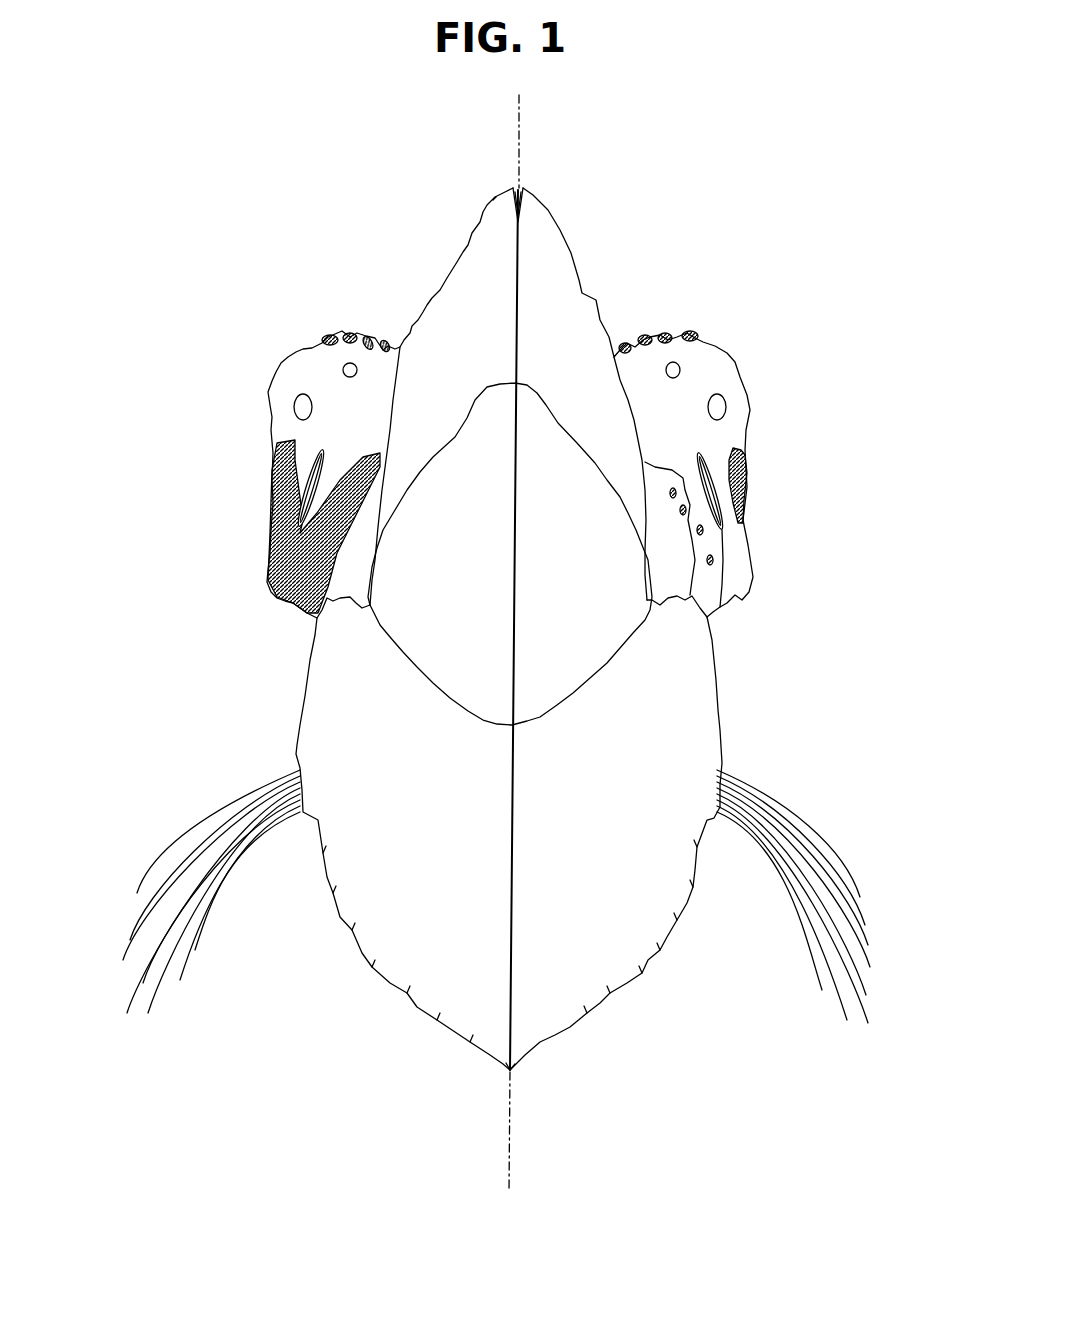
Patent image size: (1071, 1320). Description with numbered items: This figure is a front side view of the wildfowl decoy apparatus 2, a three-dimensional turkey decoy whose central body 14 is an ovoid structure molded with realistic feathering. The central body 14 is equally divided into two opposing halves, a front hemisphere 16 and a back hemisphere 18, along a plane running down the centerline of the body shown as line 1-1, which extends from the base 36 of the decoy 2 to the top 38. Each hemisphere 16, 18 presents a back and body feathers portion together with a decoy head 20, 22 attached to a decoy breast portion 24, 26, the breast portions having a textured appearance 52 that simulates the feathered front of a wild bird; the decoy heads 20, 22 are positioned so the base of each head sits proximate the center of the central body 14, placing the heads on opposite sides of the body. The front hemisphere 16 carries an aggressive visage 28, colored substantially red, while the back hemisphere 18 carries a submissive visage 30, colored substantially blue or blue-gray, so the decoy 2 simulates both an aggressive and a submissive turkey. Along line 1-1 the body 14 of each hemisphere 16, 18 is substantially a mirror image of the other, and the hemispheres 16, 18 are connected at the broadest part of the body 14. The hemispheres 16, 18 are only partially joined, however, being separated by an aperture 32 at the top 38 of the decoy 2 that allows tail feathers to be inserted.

The line 1- 1 is at (522, 103).
The wildfowl decoy apparatus 2 is at (582, 205).
The central body 14 is at (437, 975).
The front hemisphere 16 is at (357, 882).
The back hemisphere 18 is at (623, 918).
The decoy head 20 is at (337, 397).
The decoy head 22 is at (678, 362).
The decoy breast portion 24 is at (336, 709).
The decoy breast portion 26 is at (675, 727).
The aggressive visage 28 is at (285, 530).
The submissive visage 30 is at (733, 547).
The aperture 32 is at (530, 176).
The base 36 is at (512, 1072).
The top 38 is at (493, 200).
The textured appearance 52 is at (608, 1035).